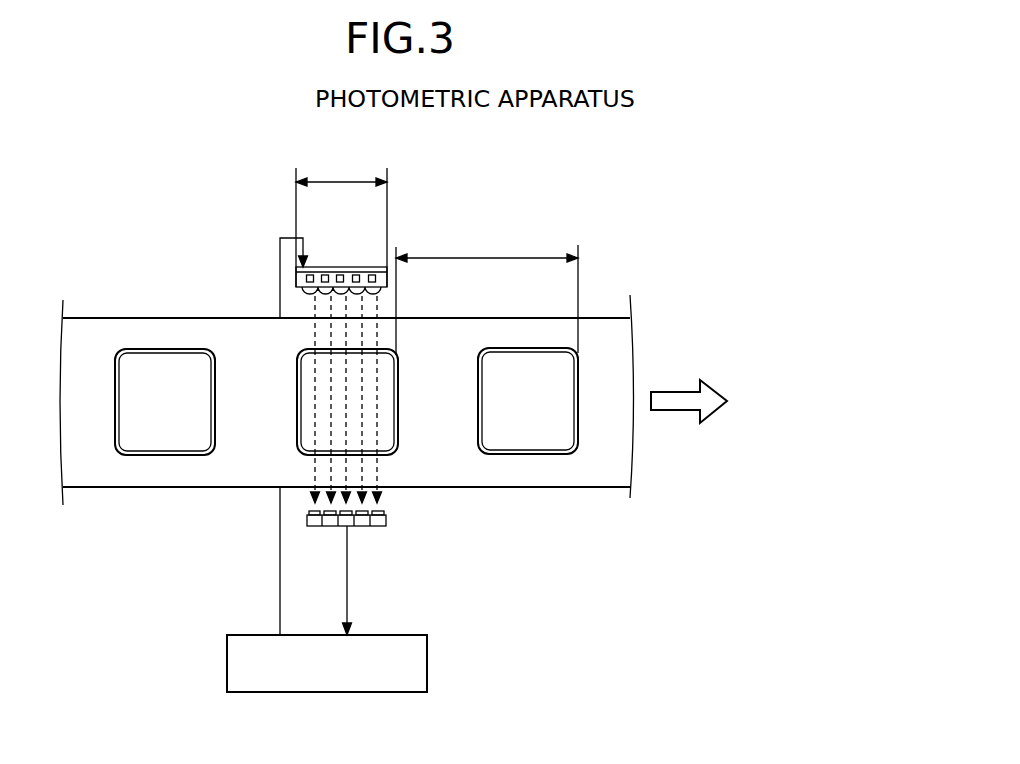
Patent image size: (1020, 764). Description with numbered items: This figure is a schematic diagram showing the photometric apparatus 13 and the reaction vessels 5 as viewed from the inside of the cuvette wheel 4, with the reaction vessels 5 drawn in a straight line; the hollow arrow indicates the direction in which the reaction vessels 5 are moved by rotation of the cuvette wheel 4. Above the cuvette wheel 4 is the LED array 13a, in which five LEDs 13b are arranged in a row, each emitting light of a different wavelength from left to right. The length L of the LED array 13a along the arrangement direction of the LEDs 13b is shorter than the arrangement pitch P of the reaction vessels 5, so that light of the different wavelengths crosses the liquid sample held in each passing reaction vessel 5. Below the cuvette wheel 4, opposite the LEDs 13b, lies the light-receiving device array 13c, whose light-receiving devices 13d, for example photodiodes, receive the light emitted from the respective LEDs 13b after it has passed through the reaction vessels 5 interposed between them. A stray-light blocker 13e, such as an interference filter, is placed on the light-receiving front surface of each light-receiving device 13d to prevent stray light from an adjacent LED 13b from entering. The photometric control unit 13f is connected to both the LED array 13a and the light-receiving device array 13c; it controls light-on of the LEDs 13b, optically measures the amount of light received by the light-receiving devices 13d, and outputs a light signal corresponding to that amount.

The cuvette wheel 4 is at (157, 325).
The reaction vessel 5 is at (165, 456).
The photometric apparatus 13 is at (441, 151).
The LED array 13a is at (345, 258).
The LED 13b is at (310, 275).
The light-receiving device array 13c is at (377, 537).
The light-receiving device 13d is at (334, 527).
The stray-light blocker 13e is at (386, 513).
The photometric control unit 13f is at (427, 662).